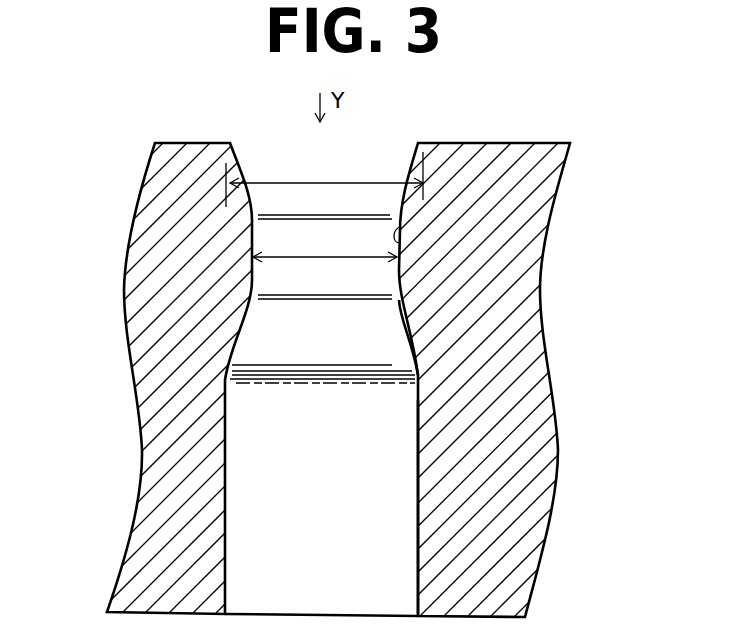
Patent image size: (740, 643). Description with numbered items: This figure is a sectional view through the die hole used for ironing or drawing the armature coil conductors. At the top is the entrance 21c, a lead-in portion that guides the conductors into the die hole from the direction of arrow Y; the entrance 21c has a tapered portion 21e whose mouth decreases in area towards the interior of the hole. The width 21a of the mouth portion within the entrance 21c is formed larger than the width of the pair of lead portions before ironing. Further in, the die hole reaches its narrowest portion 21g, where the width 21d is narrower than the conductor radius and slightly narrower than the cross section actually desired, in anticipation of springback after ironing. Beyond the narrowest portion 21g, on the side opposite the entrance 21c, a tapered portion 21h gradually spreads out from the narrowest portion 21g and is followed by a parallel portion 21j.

The width of the mouth portion 21a is at (273, 183).
The entrance 21c is at (350, 165).
The width of the mouth portion at the narrowest portion 21d is at (291, 256).
The tapered portion 21e is at (416, 180).
The narrowest portion 21g is at (402, 218).
The tapered portion 21h is at (402, 332).
The parallel portion 21j is at (412, 505).